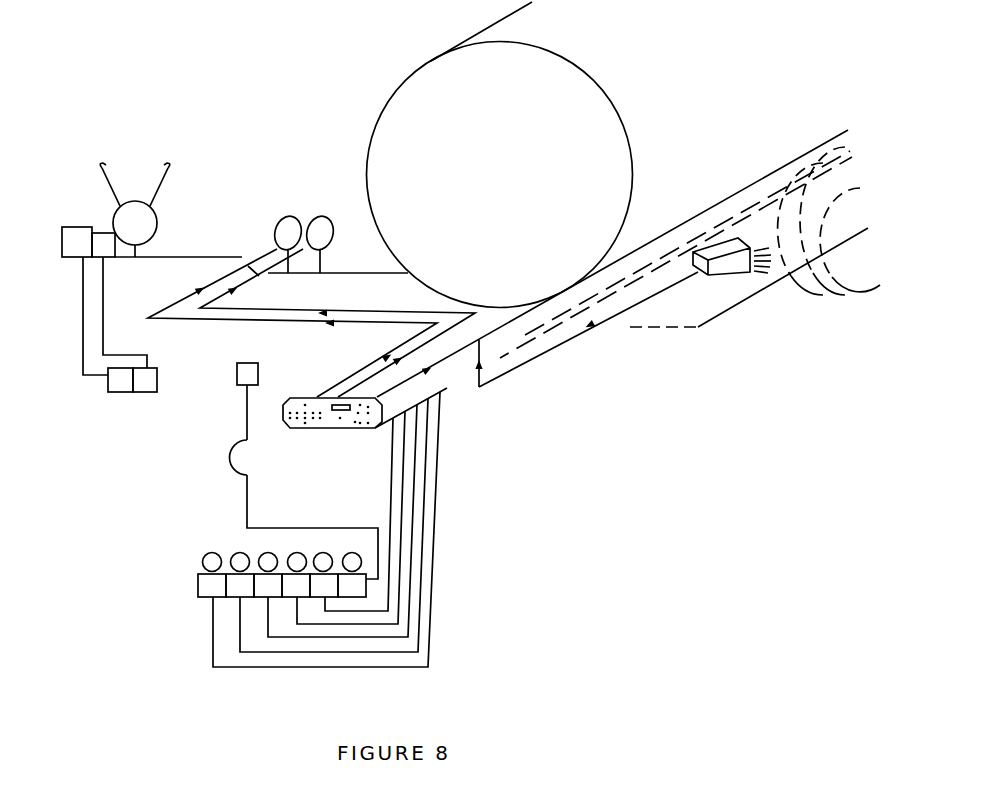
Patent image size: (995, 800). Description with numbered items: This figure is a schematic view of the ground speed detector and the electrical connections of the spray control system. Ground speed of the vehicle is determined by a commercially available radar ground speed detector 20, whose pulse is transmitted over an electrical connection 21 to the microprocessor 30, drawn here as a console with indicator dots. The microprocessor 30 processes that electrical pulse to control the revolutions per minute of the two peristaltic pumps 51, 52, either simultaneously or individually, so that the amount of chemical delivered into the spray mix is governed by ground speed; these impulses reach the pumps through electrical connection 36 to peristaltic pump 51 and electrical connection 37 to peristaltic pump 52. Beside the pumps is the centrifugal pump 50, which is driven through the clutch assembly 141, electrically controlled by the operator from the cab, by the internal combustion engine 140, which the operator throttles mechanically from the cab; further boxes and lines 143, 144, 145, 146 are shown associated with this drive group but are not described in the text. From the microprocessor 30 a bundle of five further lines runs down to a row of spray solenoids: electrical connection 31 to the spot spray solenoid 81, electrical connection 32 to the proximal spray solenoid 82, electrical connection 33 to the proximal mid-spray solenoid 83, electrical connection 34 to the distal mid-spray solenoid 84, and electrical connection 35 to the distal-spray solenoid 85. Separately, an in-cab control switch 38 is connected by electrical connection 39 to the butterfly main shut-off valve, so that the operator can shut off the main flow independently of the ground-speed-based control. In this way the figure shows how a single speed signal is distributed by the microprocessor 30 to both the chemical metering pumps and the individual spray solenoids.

The radar ground speed detector 20 is at (733, 276).
The electrical connection 21 is at (537, 357).
The microprocessor 30 is at (297, 430).
The electrical connection 31 is at (357, 613).
The electrical connection 32 is at (335, 626).
The electrical connection 33 is at (308, 639).
The electrical connection 34 is at (273, 654).
The electrical connection 35 is at (230, 669).
The electrical connection 36 is at (237, 270).
The electrical connection 37 is at (245, 281).
The in-cab control switch 38 is at (247, 362).
The electrical connection 39 is at (247, 407).
The centrifugal pump 50 is at (118, 207).
The peristaltic pump 51 is at (288, 234).
The peristaltic pump 52 is at (326, 234).
The spot spray solenoid 81 is at (325, 611).
The proximal spray solenoid 82 is at (297, 613).
The proximal mid-spray solenoid 83 is at (268, 613).
The distal mid-spray solenoid 84 is at (240, 613).
The distal-spray solenoid 85 is at (213, 613).
The internal combustion engine 140 is at (72, 258).
The clutch assembly 141 is at (107, 257).
The signal line 143 is at (93, 378).
The signal line 144 is at (103, 328).
The processor unit 145 is at (125, 393).
The processor unit 146 is at (148, 367).